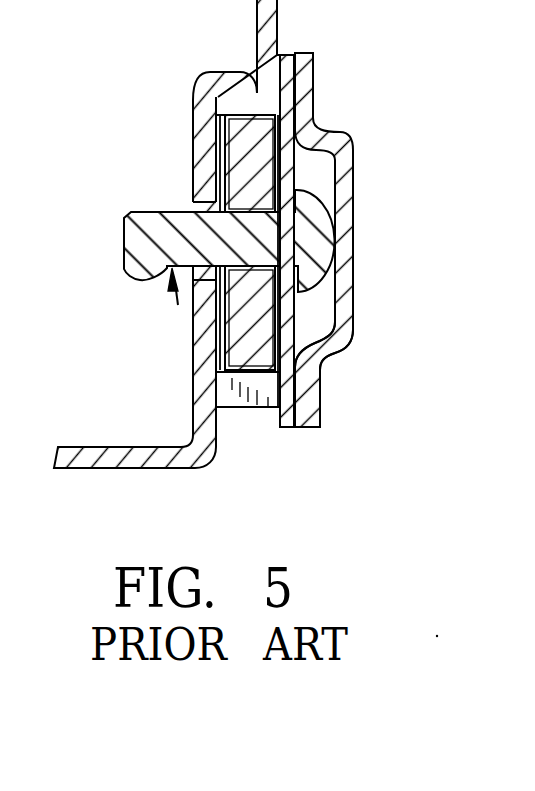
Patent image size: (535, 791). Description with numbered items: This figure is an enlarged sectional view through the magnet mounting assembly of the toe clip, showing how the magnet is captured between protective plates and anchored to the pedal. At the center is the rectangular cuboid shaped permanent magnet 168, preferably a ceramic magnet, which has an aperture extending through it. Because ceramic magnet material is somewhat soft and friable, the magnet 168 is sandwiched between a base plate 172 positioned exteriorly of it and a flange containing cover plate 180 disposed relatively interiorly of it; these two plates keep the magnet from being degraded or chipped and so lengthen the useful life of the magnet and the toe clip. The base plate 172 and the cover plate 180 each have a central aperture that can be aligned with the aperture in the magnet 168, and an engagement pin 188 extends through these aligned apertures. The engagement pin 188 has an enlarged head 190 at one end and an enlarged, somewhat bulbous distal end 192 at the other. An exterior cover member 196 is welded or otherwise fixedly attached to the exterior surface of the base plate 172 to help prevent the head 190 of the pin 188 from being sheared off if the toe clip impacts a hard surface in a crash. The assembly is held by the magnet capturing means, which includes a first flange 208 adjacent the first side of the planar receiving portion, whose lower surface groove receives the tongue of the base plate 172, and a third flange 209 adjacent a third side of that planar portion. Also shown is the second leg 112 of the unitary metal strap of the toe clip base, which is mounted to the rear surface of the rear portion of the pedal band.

The second leg 112 is at (120, 455).
The permanent magnet 168 is at (262, 355).
The base plate 172 is at (280, 55).
The cover plate 180 is at (191, 91).
The engagement pin 188 is at (178, 305).
The enlarged head 190 is at (355, 320).
The distal end 192 is at (123, 238).
The exterior cover member 196 is at (353, 215).
The first flange 208 is at (227, 418).
The third flange 209 is at (243, 72).